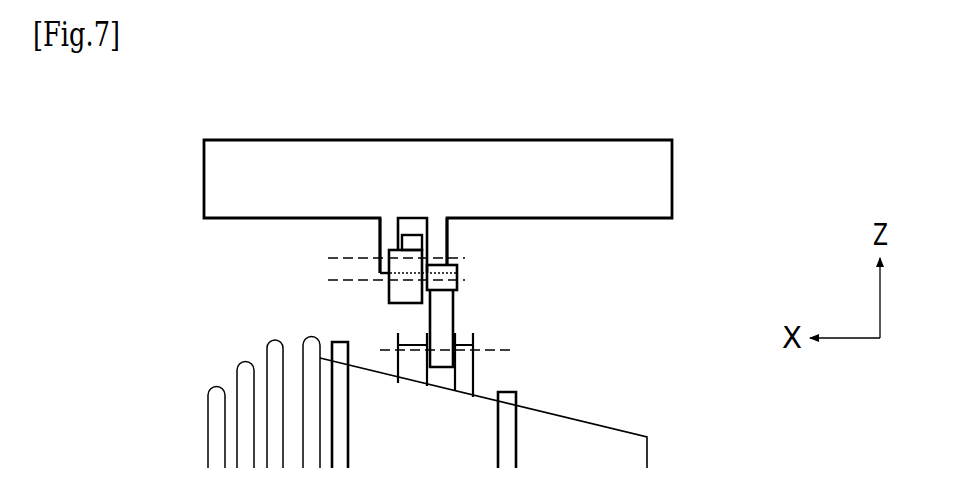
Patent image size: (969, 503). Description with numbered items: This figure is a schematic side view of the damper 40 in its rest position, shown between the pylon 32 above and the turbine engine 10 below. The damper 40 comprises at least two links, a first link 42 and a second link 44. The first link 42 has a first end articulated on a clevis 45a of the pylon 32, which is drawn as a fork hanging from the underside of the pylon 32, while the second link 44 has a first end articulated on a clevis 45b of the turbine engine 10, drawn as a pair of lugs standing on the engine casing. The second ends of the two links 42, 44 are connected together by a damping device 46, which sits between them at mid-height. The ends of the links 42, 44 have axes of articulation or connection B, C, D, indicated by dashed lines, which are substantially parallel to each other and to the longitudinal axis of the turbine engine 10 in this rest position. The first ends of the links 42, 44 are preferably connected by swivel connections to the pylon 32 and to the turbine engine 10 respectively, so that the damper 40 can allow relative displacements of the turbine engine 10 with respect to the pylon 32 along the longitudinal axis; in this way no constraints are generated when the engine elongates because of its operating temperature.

The pylon 32 is at (228, 157).
The clevis of the pylon 45a is at (390, 220).
The first link 42 is at (410, 243).
The damping device 46 is at (386, 302).
The second link 44 is at (443, 315).
The clevis of the turbine engine 45b is at (410, 371).
The damper 40 is at (558, 283).
The turbine engine 10 is at (208, 378).
The axis of articulation B is at (328, 258).
The axis of articulation D is at (328, 280).
The axis of articulation C is at (493, 350).